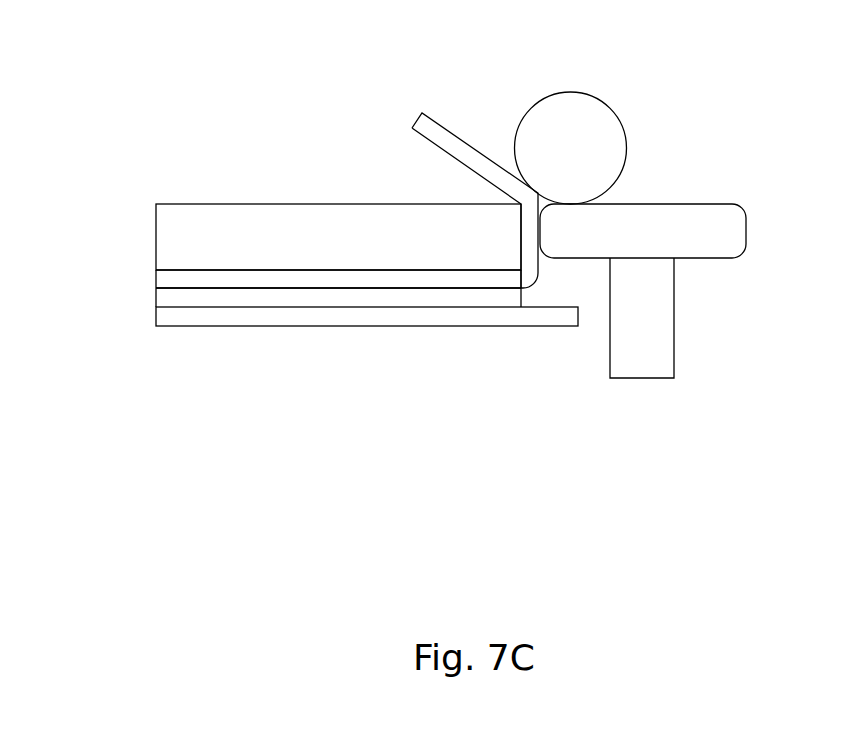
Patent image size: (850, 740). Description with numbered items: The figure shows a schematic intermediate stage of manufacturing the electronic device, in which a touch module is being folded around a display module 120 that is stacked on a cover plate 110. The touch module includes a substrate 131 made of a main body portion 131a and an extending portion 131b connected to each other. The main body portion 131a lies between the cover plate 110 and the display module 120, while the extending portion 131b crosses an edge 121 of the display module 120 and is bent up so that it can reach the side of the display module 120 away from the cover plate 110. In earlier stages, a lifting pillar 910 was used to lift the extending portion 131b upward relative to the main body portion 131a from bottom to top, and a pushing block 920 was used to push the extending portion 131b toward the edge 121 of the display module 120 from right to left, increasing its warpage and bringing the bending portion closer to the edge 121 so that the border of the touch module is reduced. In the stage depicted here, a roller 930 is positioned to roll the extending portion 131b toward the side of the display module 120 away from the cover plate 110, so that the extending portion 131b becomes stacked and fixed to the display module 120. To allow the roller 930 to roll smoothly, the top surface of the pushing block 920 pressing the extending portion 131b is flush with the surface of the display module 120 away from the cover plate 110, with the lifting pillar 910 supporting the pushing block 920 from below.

The cover plate 110 is at (166, 316).
The display module 120 is at (166, 242).
The edge of the display module 121 is at (518, 237).
The substrate 131 is at (323, 62).
The main body portion 131a is at (378, 282).
The extending portion 131b is at (473, 161).
The lifting pillar 910 is at (657, 332).
The pushing block 920 is at (732, 235).
The roller 930 is at (617, 143).